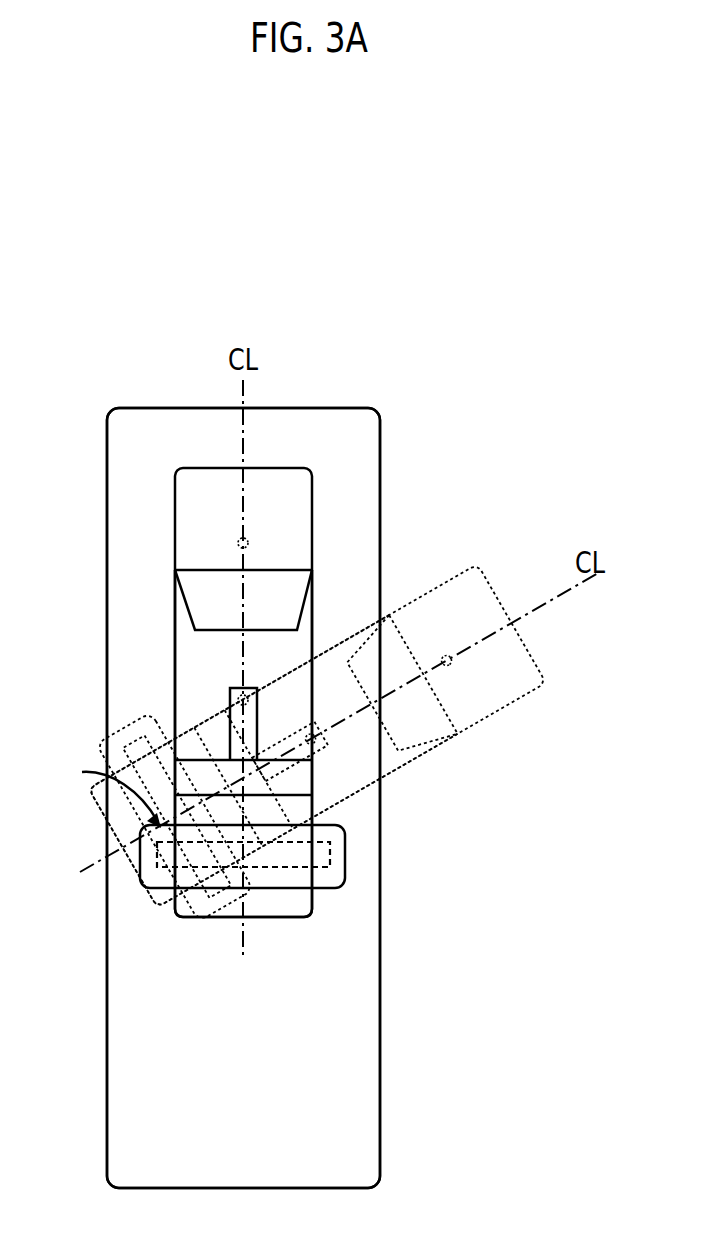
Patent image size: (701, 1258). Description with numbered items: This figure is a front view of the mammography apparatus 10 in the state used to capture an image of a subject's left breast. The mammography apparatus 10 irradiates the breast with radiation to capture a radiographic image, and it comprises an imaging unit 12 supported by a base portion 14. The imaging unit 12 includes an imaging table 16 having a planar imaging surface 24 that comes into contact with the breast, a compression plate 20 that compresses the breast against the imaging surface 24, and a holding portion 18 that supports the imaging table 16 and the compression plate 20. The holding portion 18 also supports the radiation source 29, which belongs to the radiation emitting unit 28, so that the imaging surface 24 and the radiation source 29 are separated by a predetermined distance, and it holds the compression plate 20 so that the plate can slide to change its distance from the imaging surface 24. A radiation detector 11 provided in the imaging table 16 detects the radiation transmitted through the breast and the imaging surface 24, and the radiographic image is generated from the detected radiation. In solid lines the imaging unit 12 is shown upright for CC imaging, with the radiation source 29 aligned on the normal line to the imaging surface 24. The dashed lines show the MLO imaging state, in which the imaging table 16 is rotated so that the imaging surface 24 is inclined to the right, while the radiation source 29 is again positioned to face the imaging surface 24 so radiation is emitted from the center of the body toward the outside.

The mammography apparatus 10 is at (76, 405).
The radiation detector 11 is at (325, 855).
The imaging unit 12 is at (312, 512).
The base portion 14 is at (379, 430).
The imaging table 16 is at (133, 717).
The holding portion 18 is at (175, 637).
The compression plate 20 is at (313, 773).
The imaging surface 24 is at (105, 792).
The radiation emitting unit 28 is at (175, 548).
The radiation source 29 is at (238, 543).